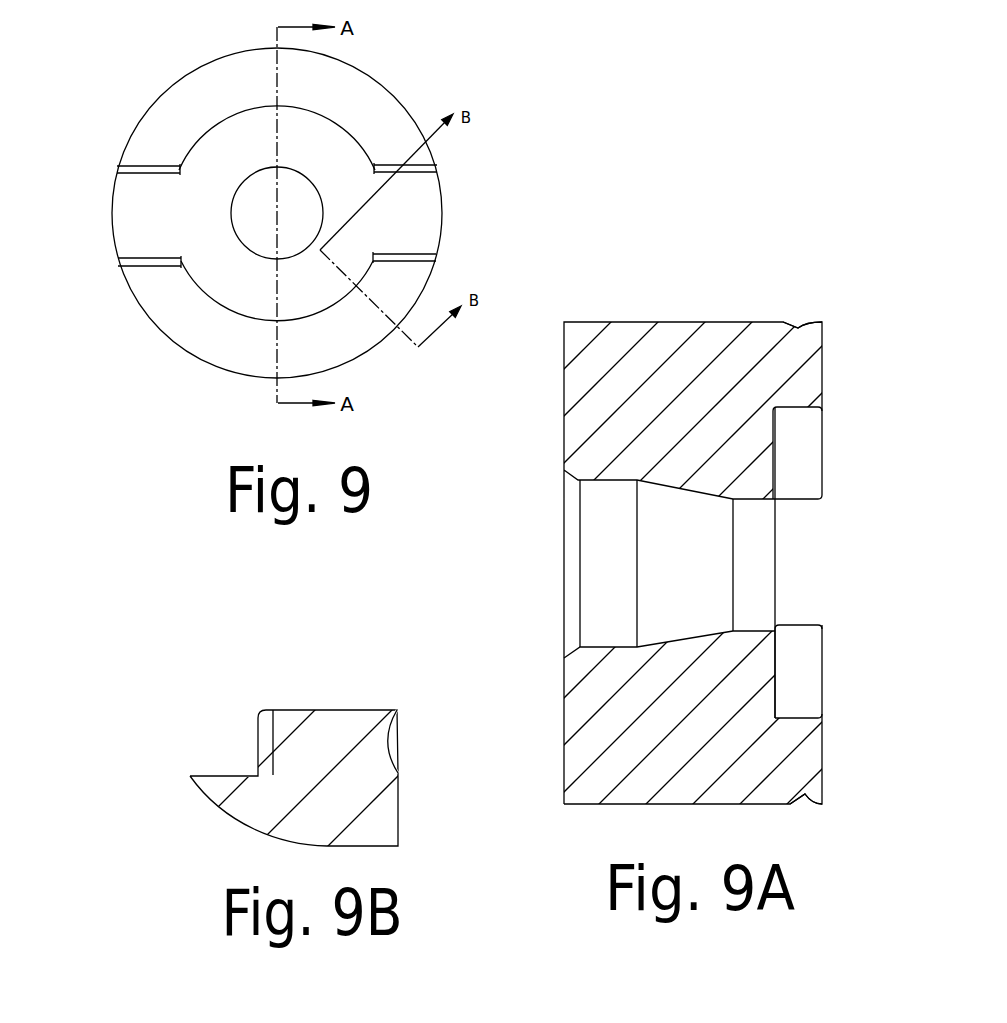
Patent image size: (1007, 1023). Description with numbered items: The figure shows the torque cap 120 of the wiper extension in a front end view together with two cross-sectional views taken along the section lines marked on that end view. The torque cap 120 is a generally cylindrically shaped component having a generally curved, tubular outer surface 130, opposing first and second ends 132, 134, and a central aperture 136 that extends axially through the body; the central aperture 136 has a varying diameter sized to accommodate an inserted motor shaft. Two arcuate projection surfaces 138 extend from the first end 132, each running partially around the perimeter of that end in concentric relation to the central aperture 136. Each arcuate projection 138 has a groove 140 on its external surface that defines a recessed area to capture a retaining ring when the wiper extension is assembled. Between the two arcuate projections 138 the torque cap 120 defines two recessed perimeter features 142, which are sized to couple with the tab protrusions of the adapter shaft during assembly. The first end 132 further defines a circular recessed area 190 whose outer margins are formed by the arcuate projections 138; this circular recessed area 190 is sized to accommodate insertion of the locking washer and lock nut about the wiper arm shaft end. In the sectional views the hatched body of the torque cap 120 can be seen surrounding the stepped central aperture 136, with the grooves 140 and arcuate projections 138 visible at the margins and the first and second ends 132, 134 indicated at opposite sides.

In FIG. 9, the torque cap 120 is at (243, 130).
In FIG. 9A, the torque cap 120 is at (658, 345).
In FIG. 9B, the torque cap 120 is at (320, 737).
In FIG. 9, the outer surface 130 is at (385, 88).
In FIG. 9A, the outer surface 130 is at (740, 322).
In FIG. 9A, the first end 132 is at (851, 588).
In FIG. 9A, the second end 134 is at (536, 590).
In FIG. 9, the central aperture 136 is at (252, 177).
In FIG. 9A, the central aperture 136 is at (568, 533).
In FIG. 9, the arcuate projection surfaces 138 is at (271, 212).
In FIG. 9A, the arcuate projection surfaces 138 is at (823, 373).
In FIG. 9A, the groove 140 is at (795, 328).
In FIG. 9B, the groove 140 is at (387, 742).
In FIG. 9, the recessed perimeter features 142 is at (440, 207).
In FIG. 9, the circular recessed area 190 is at (203, 207).